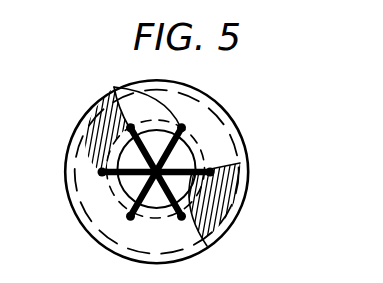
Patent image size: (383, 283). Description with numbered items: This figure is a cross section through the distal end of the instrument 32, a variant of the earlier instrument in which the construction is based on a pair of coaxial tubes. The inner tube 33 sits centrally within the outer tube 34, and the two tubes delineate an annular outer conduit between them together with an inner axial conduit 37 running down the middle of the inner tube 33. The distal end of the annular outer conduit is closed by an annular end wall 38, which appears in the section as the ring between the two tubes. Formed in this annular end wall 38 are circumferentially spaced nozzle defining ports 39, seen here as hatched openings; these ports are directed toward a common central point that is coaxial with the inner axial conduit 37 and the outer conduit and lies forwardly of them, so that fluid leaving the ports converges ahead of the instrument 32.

The instrument 32 is at (61, 191).
The inner tube 33 is at (111, 188).
The outer tube 34 is at (70, 143).
The inner axial conduit 37 is at (183, 153).
The annular end wall 38 is at (216, 115).
The nozzle defining ports 39 is at (114, 86).